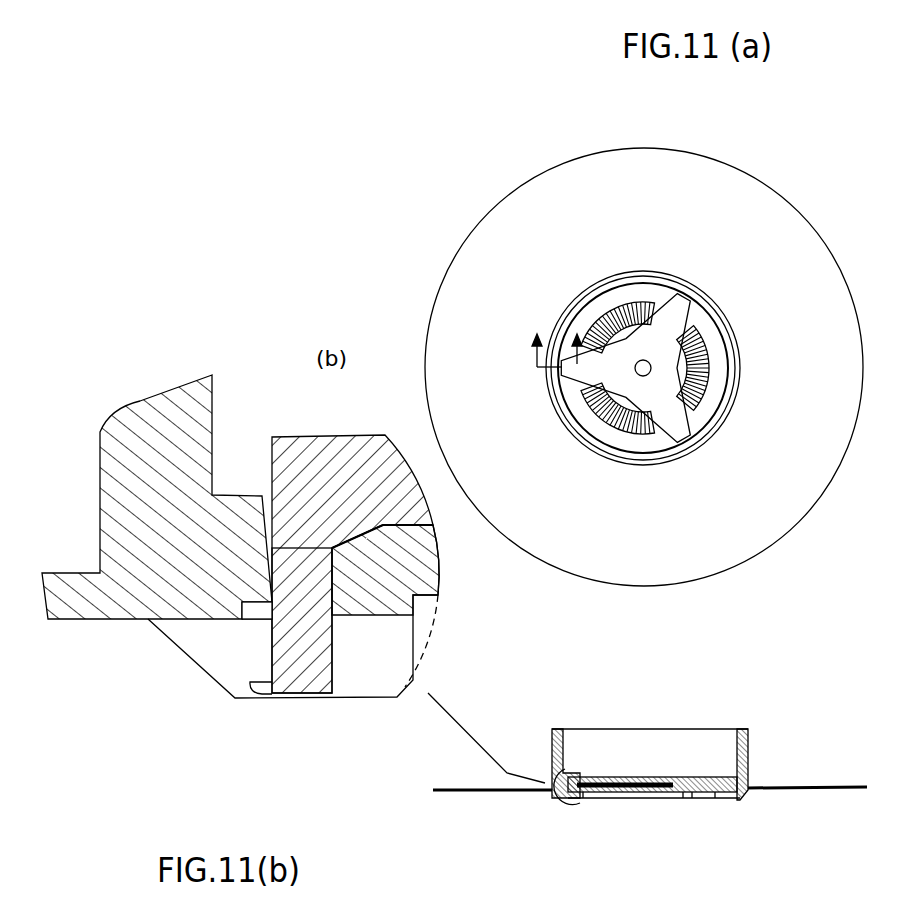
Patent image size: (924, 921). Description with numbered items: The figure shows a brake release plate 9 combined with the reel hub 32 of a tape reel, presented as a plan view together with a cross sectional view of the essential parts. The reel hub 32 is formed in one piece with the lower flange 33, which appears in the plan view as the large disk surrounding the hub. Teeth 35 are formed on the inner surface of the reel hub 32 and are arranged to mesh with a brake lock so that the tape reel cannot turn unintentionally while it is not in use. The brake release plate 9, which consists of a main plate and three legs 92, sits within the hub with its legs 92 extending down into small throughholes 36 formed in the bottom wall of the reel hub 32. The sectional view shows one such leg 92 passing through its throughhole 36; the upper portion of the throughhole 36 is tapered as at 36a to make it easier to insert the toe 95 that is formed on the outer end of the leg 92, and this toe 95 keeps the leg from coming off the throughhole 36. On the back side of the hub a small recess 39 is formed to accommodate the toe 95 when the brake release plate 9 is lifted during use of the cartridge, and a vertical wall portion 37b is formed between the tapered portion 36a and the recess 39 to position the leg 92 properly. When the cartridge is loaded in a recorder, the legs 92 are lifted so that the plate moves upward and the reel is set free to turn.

In FIG. 11A, the brake release plate 9 is at (648, 338).
In FIG. 11A, the reel hub 32 is at (738, 392).
In FIG. 11A, the lower flange 33 is at (497, 225).
In FIG. 11A, the teeth 35 is at (703, 340).
In FIG. 11B, the throughhole 36 is at (259, 464).
In FIG. 11B, the tapered portion 36a is at (262, 523).
In FIG. 11B, the vertical wall portion 37b is at (272, 580).
In FIG. 11B, the recess 39 is at (257, 614).
In FIG. 11B, the leg 92 is at (303, 643).
In FIG. 11B, the toe 95 is at (260, 688).